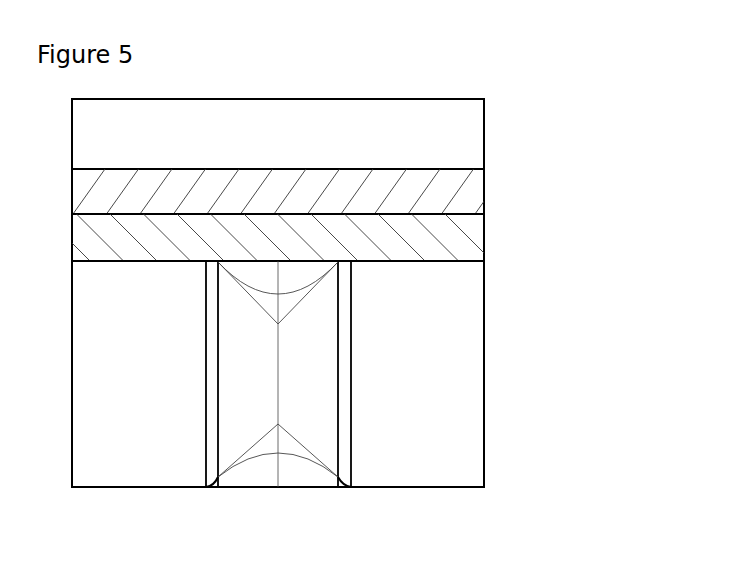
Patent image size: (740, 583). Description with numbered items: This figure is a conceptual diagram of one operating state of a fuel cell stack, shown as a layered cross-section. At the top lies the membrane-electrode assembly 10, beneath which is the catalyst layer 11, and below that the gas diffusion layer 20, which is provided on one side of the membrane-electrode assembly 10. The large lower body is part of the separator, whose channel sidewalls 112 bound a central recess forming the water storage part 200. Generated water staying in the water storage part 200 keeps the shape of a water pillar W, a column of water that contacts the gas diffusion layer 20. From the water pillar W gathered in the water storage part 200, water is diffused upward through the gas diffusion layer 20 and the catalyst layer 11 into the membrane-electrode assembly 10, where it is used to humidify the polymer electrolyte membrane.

The membrane-electrode assembly 10 is at (484, 131).
The catalyst layer 11 is at (484, 185).
The gas diffusion layer 20 is at (484, 235).
The sidewall 112 is at (473, 372).
The water storage part 200 is at (250, 490).
The water pillar W is at (320, 422).